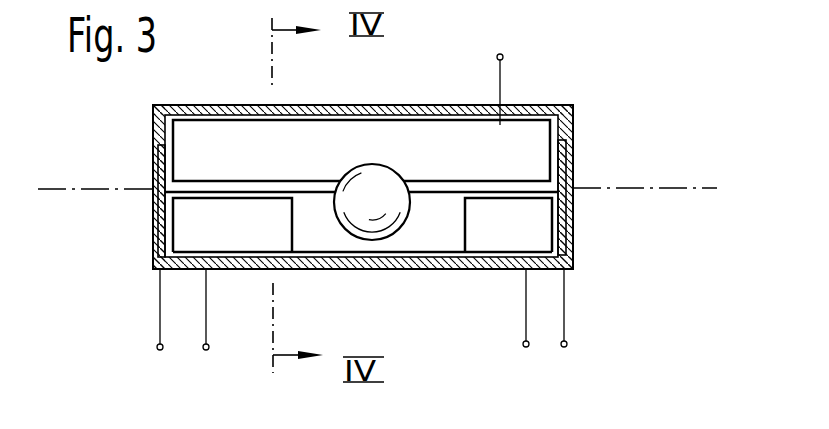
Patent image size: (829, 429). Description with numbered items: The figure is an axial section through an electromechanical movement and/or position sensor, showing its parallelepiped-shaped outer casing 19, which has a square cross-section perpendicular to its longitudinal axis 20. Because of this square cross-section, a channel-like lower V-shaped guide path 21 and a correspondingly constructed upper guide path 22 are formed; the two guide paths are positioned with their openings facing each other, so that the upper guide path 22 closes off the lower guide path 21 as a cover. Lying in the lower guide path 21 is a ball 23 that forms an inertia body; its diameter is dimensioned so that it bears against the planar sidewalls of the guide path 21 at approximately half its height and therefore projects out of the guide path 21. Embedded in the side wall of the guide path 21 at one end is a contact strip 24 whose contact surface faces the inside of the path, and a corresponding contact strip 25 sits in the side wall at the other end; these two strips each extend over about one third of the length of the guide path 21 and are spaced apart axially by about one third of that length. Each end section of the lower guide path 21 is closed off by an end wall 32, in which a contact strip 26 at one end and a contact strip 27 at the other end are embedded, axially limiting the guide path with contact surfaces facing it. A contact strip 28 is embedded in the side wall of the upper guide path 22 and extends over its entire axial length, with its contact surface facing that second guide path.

The outer casing 19 is at (470, 268).
The longitudinal axis 20 is at (693, 185).
The lower guide path 21 is at (446, 242).
The upper guide path 22 is at (533, 126).
The ball 23 is at (375, 248).
The contact strip 24 is at (237, 262).
The contact strip 25 is at (503, 268).
The contact strip 26 is at (152, 262).
The contact strip 27 is at (578, 255).
The contact strip 28 is at (466, 126).
The end wall 32 is at (152, 207).